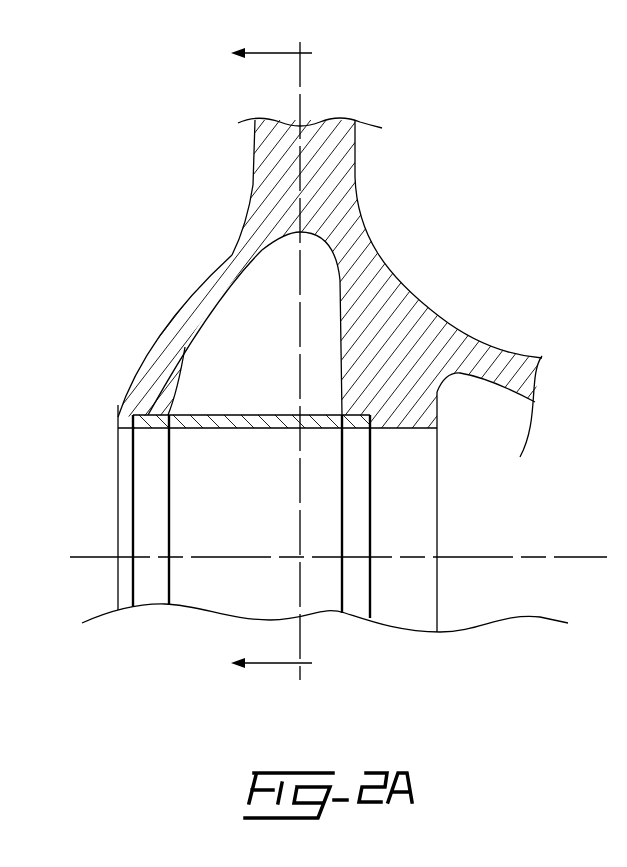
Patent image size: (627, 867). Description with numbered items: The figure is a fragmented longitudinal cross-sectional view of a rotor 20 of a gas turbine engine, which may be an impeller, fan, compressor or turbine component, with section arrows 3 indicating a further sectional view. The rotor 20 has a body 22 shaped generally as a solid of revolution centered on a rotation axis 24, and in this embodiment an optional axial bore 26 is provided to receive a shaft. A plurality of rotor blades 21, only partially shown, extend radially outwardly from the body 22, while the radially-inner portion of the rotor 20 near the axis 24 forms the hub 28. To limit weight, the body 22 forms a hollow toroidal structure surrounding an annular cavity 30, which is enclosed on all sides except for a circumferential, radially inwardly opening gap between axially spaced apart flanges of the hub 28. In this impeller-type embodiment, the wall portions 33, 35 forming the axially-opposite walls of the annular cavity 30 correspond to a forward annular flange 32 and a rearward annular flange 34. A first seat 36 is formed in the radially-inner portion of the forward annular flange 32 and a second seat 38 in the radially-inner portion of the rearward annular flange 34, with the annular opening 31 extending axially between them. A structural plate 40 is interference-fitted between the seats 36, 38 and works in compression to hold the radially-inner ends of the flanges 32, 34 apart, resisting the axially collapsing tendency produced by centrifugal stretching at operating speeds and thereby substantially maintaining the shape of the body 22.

The rotor 20 is at (512, 153).
The rotor blades 21 is at (350, 139).
The body 22 is at (487, 333).
The rotation axis 24 is at (533, 557).
The axial bore 26 is at (255, 542).
The hub 28 is at (398, 418).
The annular cavity 30 is at (275, 360).
The annular opening 31 is at (231, 404).
The forward annular flange 32 is at (193, 303).
The wall portion 33 is at (238, 269).
The rearward annular flange 34 is at (428, 302).
The wall portion 35 is at (349, 258).
The first seat 36 is at (140, 414).
The second seat 38 is at (370, 430).
The structural plate 40 is at (240, 432).
The section line 3 is at (256, 359).